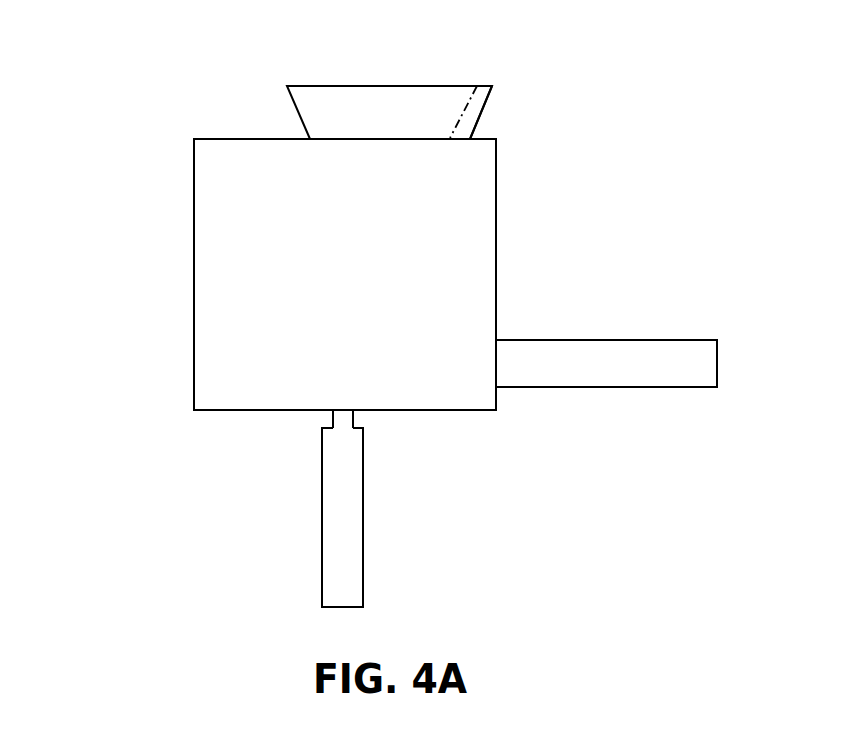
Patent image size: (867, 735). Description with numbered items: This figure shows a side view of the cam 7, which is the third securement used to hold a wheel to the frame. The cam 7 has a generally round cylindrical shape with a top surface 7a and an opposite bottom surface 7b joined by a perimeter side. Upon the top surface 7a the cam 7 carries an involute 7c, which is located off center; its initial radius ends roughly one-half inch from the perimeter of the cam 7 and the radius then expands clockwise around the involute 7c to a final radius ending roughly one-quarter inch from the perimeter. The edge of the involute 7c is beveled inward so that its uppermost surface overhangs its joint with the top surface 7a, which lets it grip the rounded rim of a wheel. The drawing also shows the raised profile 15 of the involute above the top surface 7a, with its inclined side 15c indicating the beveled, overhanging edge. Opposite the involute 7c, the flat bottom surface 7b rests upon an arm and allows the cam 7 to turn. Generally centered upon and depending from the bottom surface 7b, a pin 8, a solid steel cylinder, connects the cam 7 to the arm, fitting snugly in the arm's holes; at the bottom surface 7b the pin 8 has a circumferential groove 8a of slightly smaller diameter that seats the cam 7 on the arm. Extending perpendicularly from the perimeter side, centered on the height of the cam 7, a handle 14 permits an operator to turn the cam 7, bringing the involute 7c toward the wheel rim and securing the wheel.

The cam 7 is at (148, 278).
The top surface 7a is at (228, 137).
The bottom surface 7b is at (235, 412).
The involute 7c is at (391, 85).
The protrusion 15 is at (307, 84).
The inclined side of protrusion 15c is at (481, 100).
The handle 14 is at (620, 352).
The pin 8 is at (322, 572).
The circumferential groove 8a is at (362, 418).